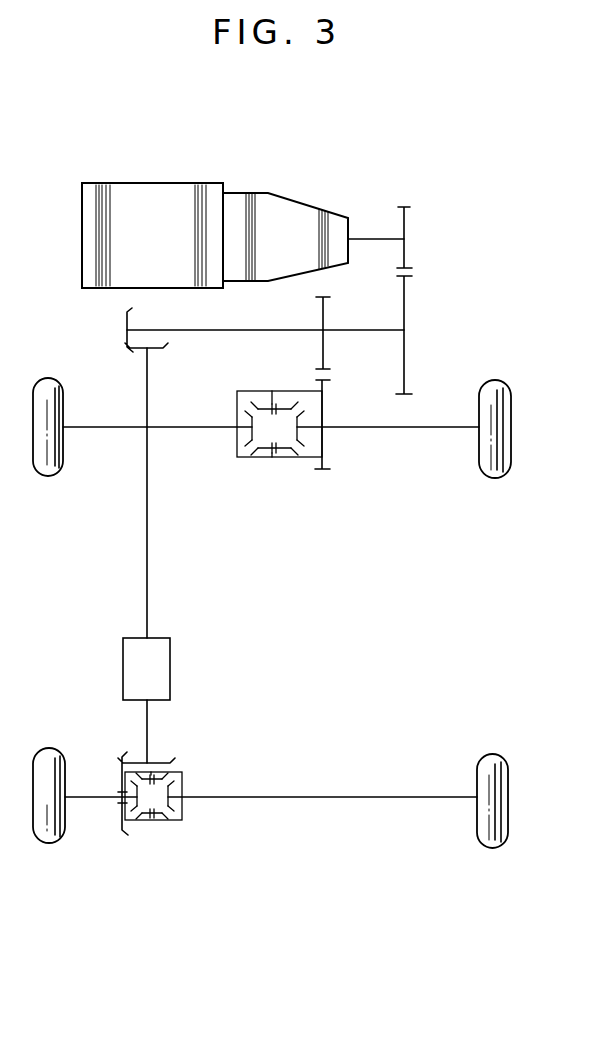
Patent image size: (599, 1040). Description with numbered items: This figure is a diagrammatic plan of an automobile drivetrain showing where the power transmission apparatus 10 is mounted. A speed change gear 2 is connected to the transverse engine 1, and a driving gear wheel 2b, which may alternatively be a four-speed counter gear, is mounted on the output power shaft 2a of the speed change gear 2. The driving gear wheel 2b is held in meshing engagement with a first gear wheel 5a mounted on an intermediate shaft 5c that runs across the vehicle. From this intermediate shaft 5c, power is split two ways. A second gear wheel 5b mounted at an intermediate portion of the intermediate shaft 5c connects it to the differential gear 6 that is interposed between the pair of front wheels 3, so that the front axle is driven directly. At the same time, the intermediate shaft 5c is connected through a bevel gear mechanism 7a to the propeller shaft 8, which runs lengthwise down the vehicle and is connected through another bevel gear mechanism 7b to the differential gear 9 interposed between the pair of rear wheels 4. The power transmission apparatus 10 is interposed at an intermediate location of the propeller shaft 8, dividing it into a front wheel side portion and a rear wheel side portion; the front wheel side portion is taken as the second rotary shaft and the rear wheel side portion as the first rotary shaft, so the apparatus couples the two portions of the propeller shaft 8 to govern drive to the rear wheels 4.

The transverse engine 1 is at (154, 193).
The speed change gear 2 is at (295, 214).
The output power shaft 2a is at (366, 238).
The driving gear wheel 2b is at (406, 225).
The first gear wheel 5a is at (406, 308).
The second gear wheel 5b is at (326, 302).
The intermediate shaft 5c is at (253, 329).
The bevel gear mechanism 7a is at (118, 330).
The differential gear 6 is at (272, 458).
The front wheels 3 is at (47, 477).
The propeller shaft 8 is at (148, 590).
The power transmission apparatus 10 is at (170, 673).
The bevel gear mechanism 7b is at (115, 760).
The differential gear 9 is at (188, 775).
The rear wheels 4 is at (47, 845).